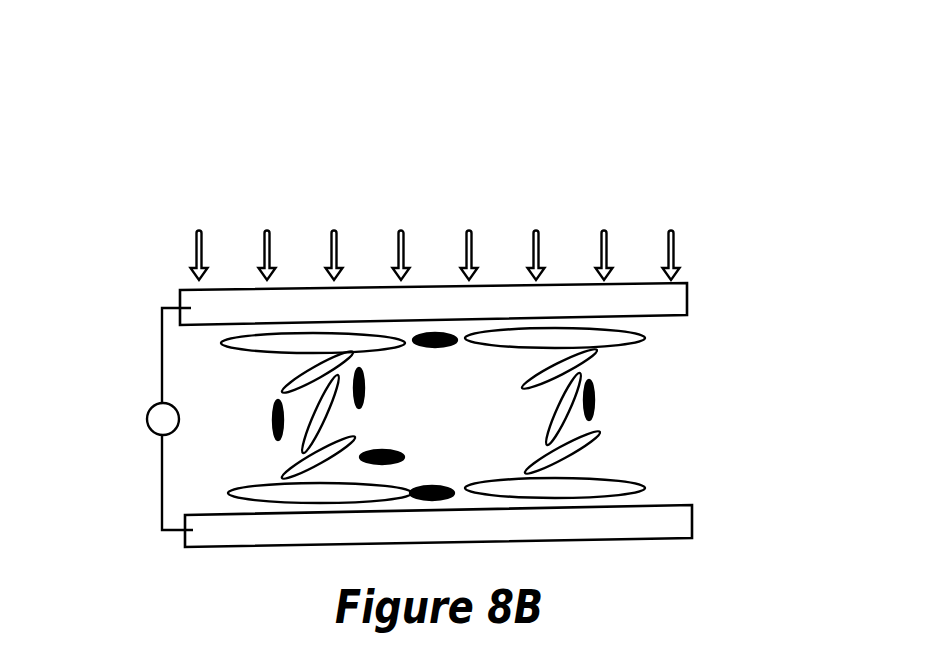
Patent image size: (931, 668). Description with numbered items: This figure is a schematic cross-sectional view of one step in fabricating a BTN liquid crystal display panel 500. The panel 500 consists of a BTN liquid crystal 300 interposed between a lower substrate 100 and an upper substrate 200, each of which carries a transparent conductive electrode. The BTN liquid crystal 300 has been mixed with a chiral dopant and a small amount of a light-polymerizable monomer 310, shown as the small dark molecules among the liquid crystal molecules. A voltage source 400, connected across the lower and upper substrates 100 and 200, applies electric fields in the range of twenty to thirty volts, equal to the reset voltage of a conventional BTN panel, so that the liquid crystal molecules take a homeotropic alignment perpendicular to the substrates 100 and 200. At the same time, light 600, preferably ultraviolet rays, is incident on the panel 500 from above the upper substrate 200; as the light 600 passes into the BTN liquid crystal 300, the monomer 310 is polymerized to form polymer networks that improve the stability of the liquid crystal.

The lower substrate 100 is at (688, 518).
The upper substrate 200 is at (683, 302).
The BTN liquid crystal 300 is at (496, 410).
The monomer 310 is at (364, 392).
The voltage source 400 is at (147, 419).
The BTN liquid crystal display panel 500 is at (714, 182).
The light 600 is at (203, 217).